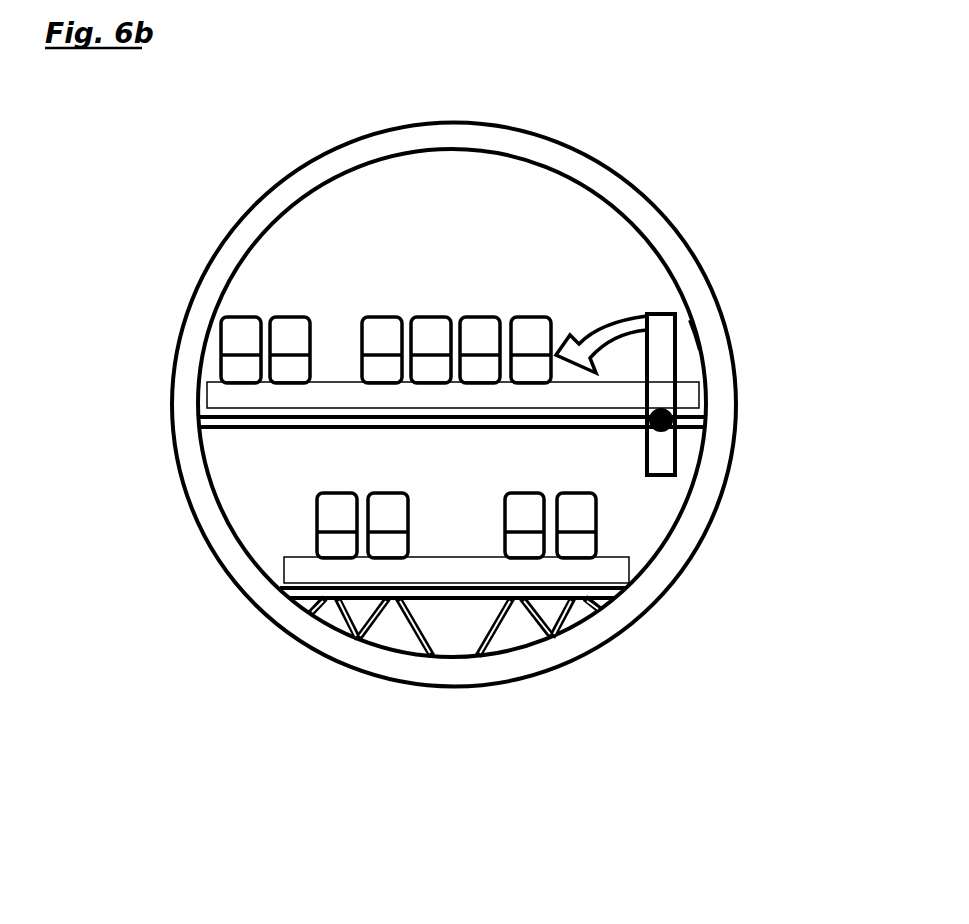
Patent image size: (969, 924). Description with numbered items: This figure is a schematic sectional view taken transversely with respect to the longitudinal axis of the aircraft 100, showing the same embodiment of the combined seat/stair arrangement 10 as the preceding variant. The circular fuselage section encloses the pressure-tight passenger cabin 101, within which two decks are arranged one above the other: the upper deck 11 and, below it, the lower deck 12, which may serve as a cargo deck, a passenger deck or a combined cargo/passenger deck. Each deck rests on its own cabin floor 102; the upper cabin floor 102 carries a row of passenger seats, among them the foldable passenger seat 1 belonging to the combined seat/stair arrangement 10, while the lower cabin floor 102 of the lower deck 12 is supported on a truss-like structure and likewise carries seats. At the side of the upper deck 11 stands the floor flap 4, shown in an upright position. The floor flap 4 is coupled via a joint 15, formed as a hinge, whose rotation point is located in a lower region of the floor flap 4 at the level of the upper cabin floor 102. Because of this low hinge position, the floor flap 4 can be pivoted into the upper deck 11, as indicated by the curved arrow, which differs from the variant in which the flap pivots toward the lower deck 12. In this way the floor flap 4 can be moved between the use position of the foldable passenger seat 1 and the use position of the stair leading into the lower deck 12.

The aircraft 100 is at (177, 178).
The passenger cabin 101 is at (464, 186).
The combined seat/stair arrangement 10 is at (685, 338).
The upper deck 11 is at (356, 285).
The lower deck 12 is at (456, 508).
The foldable passenger seat 1 is at (479, 317).
The floor flap 4 is at (651, 314).
The joint 15 is at (682, 418).
The cabin floor 102 is at (503, 422).